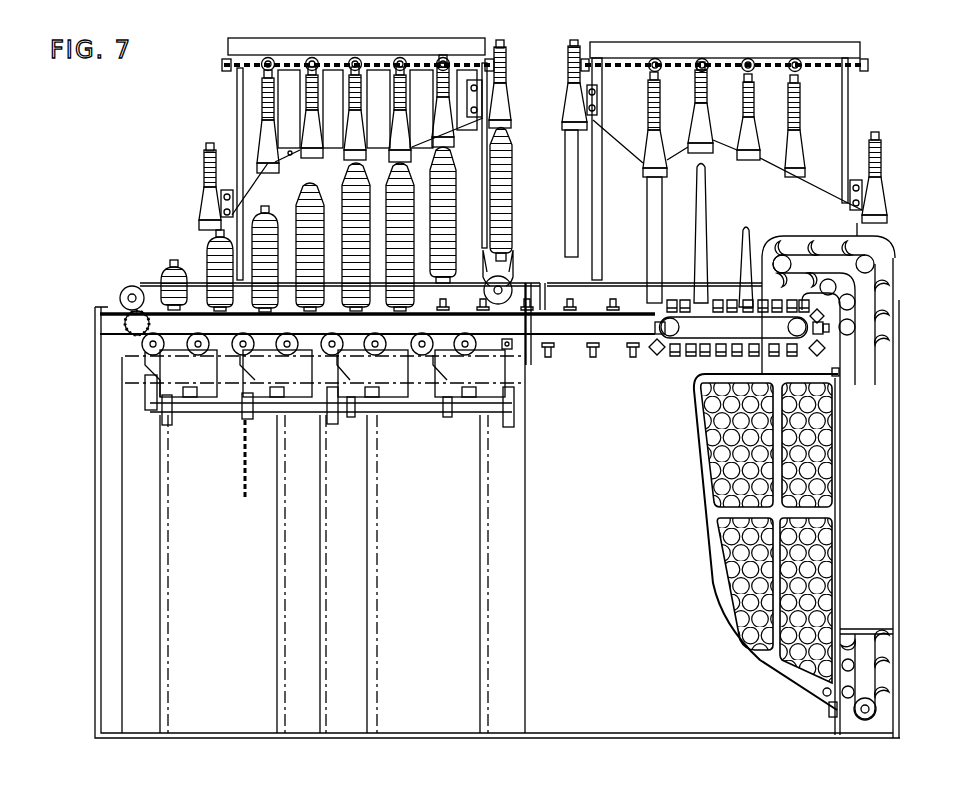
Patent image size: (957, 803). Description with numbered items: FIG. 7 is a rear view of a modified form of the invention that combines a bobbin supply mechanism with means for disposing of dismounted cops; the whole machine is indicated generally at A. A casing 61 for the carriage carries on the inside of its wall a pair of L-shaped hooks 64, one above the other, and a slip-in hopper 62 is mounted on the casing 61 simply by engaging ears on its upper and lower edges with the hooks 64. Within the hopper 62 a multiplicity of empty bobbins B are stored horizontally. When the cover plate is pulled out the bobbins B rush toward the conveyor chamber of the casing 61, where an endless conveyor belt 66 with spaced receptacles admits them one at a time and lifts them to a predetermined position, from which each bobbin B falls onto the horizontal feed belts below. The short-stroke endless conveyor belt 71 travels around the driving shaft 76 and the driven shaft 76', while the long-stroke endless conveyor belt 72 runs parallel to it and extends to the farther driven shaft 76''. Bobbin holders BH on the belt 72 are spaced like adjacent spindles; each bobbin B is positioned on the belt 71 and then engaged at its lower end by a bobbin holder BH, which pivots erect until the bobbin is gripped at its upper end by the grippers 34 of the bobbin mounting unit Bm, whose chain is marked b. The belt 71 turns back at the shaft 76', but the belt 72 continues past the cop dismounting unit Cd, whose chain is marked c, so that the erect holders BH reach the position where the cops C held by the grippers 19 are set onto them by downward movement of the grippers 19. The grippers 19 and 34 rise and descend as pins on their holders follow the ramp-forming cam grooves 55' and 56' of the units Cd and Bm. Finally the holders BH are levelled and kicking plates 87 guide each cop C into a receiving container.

The cop gripper 19 is at (262, 145).
The cam groove 55' is at (291, 169).
The cop C is at (287, 206).
The cop dismounting unit Cd is at (334, 36).
The carriage chain c is at (380, 57).
The bobbin mounting unit Bm is at (715, 40).
The carriage chain b is at (771, 64).
The bobbin gripper 34 is at (645, 170).
The cam groove 56' is at (727, 165).
The empty bobbin B is at (650, 231).
The endless conveyor belt 66 is at (878, 277).
The driven shaft 76'' is at (103, 326).
The kicking plate 87 is at (208, 388).
The endless conveyor belt 72 is at (564, 343).
The bobbin holder BH is at (596, 355).
The driven shaft 76' is at (660, 355).
The endless conveyor belt 71 is at (738, 337).
The driving shaft 76 is at (784, 328).
The L-shaped hook 64 is at (838, 372).
The casing 61 is at (897, 415).
The machine A is at (907, 500).
The slip-in hopper 62 is at (712, 545).